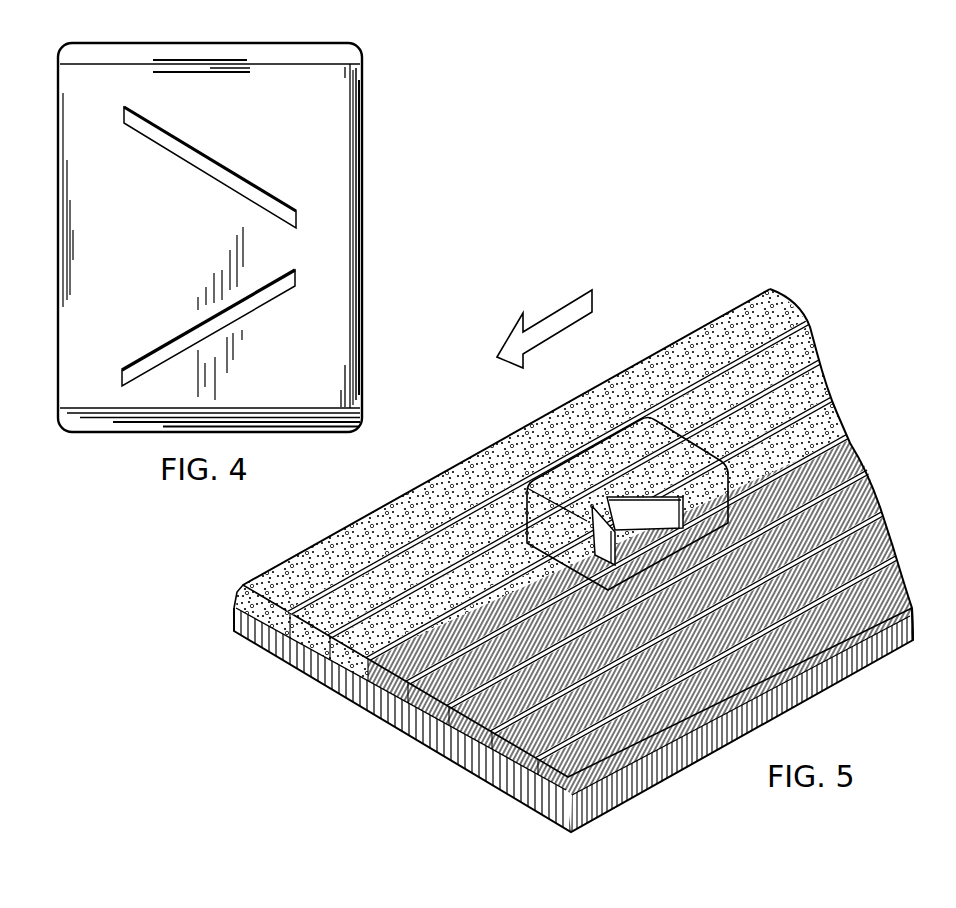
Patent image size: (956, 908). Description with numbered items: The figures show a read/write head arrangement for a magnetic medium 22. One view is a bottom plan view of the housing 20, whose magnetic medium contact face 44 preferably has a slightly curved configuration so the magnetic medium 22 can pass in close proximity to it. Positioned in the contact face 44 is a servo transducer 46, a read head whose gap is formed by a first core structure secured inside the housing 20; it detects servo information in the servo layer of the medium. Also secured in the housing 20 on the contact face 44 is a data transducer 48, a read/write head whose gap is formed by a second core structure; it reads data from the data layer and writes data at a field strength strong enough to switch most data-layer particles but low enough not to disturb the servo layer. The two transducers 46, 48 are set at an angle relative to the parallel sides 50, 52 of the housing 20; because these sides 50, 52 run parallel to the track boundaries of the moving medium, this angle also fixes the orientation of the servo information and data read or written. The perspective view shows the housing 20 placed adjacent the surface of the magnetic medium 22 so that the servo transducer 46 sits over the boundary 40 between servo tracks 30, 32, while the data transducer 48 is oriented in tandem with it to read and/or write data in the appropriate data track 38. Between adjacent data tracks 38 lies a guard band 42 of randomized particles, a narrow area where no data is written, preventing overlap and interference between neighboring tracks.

In FIG. 4, the housing 20 is at (374, 152).
In FIG. 5, the housing 20 is at (623, 437).
In FIG. 5, the magnetic medium 22 is at (685, 325).
In FIG. 5, the servo track 30 is at (268, 638).
In FIG. 5, the servo track 32 is at (412, 722).
In FIG. 5, the data track 38 is at (877, 465).
In FIG. 5, the boundary 40 is at (503, 773).
In FIG. 5, the guard band 42 is at (396, 550).
In FIG. 4, the magnetic medium contact face 44 is at (317, 106).
In FIG. 4, the servo transducer 46 is at (133, 117).
In FIG. 5, the servo transducer 46 is at (622, 498).
In FIG. 4, the data transducer 48 is at (252, 302).
In FIG. 5, the data transducer 48 is at (588, 517).
In FIG. 4, the side of housing 50 is at (366, 252).
In FIG. 4, the side of housing 52 is at (57, 393).